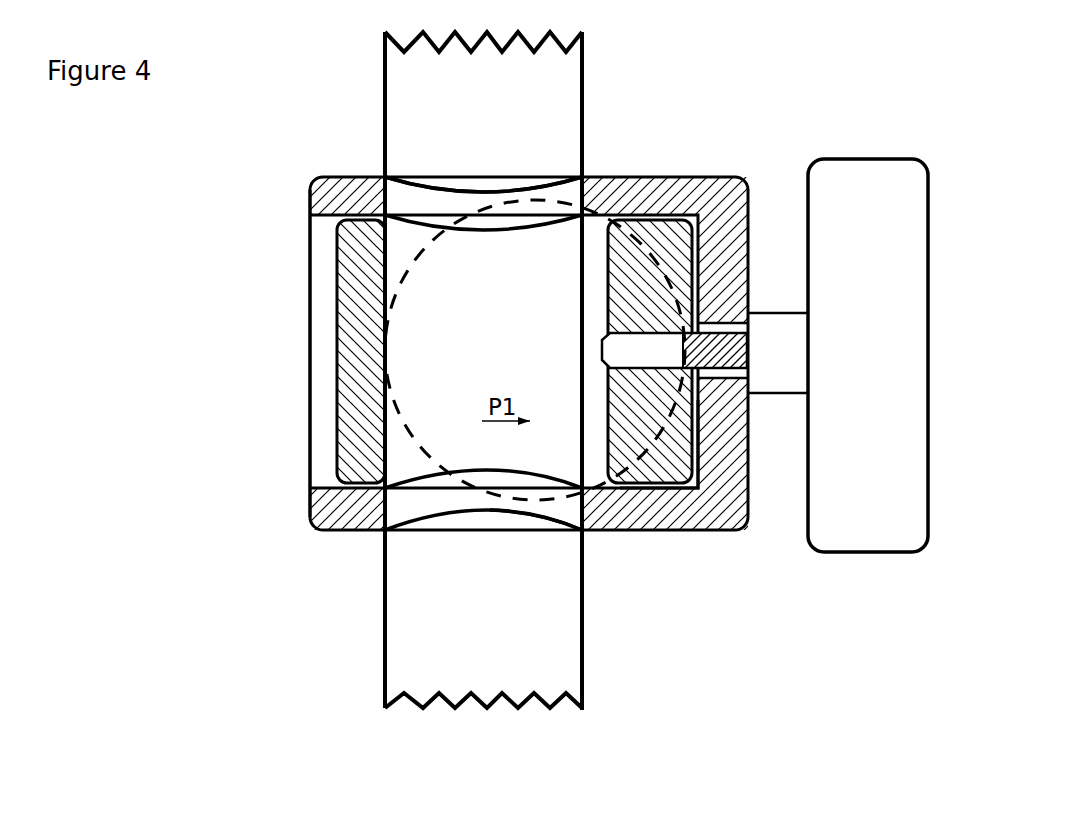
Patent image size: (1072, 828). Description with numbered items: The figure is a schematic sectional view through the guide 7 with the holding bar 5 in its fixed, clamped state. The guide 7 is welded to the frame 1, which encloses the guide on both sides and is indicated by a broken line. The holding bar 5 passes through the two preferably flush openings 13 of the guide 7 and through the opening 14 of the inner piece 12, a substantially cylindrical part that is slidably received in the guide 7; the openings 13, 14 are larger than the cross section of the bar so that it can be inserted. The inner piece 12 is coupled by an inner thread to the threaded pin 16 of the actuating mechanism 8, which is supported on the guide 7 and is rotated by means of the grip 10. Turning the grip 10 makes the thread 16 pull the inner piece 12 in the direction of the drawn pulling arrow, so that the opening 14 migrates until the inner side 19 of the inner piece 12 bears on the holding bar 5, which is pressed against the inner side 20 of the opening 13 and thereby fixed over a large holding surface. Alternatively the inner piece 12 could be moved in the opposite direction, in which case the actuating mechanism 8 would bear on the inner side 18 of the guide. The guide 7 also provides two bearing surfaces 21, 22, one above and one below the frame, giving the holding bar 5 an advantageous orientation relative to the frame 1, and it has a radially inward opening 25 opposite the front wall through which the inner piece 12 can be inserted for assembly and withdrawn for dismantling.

The frame 1 is at (490, 186).
The holding bar 5 is at (397, 72).
The guide 7 is at (313, 560).
The actuating mechanism 8 is at (877, 572).
The grip 10 is at (918, 282).
The inner piece 12 is at (353, 437).
The openings 13 is at (478, 163).
The opening 14 is at (590, 252).
The threaded pin 16 is at (727, 345).
The inner side 18 is at (693, 480).
The inner side 19 is at (387, 262).
The inner side 20 is at (573, 512).
The bearing surface 21 is at (587, 192).
The bearing surface 22 is at (583, 512).
The opening 25 is at (310, 357).